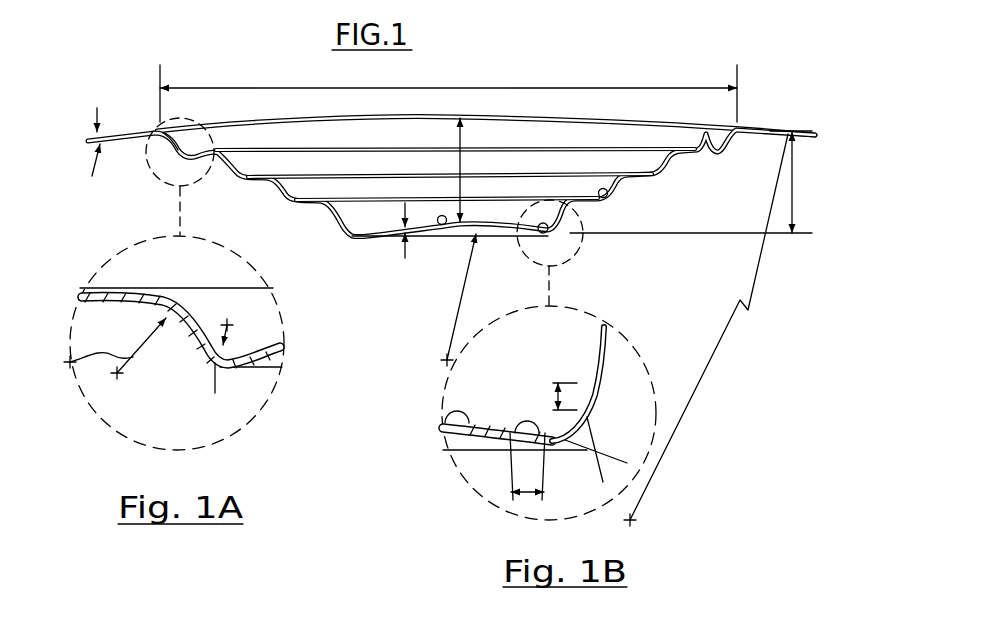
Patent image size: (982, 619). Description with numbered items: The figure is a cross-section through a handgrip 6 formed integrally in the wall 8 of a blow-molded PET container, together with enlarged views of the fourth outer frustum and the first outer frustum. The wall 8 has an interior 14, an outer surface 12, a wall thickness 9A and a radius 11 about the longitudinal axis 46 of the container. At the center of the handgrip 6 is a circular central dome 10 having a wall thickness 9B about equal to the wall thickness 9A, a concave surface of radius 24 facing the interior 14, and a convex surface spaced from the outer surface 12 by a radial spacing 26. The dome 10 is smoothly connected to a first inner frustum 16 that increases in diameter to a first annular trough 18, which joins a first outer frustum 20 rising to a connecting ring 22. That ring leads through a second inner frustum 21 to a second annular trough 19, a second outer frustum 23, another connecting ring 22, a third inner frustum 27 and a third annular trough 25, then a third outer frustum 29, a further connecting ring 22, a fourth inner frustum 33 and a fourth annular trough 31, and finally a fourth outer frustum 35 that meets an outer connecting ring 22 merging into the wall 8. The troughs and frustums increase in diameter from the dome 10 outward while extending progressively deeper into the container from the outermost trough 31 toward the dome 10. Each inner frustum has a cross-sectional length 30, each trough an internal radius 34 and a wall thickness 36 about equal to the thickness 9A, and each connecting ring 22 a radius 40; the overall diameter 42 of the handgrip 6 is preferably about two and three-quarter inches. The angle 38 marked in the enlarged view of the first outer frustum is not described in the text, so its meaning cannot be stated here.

In FIG. 1, the handgrip 6 is at (565, 108).
In FIG. 1, the wall 8 is at (818, 136).
In FIG. 1A, the wall 8 is at (88, 302).
In FIG. 1, the wall thickness 9A is at (73, 151).
In FIG. 1, the wall thickness of central dome 9B is at (398, 248).
In FIG. 1, the circular central dome 10 is at (444, 227).
In FIG. 1B, the circular central dome 10 is at (588, 398).
In FIG. 1, the radius 11 is at (700, 388).
In FIG. 1, the outer surface 12 is at (272, 123).
In FIG. 1, the interior 14 is at (393, 296).
In FIG. 1, the first inner frustum 16 is at (556, 244).
In FIG. 1B, the first inner frustum 16 is at (510, 447).
In FIG. 1, the first annular trough 18 is at (540, 236).
In FIG. 1B, the first annular trough 18 is at (556, 427).
In FIG. 1, the second annular trough 19 is at (620, 194).
In FIG. 1, the first outer frustum 20 is at (563, 222).
In FIG. 1, the second inner frustum 21 is at (587, 204).
In FIG. 1, the connecting ring 22 is at (610, 183).
In FIG. 1A, the connecting ring 22 is at (163, 297).
In FIG. 1B, the connecting ring 22 is at (590, 340).
In FIG. 1, the second outer frustum 23 is at (609, 203).
In FIG. 1, the radius of the concave surface 24 is at (452, 343).
In FIG. 1, the third annular trough 25 is at (685, 173).
In FIG. 1, the radial spacing 26 is at (462, 160).
In FIG. 1, the third inner frustum 27 is at (655, 180).
In FIG. 1, the third outer frustum 29 is at (680, 166).
In FIG. 1B, the length of inner frustum 30 is at (556, 393).
In FIG. 1, the fourth annular trough 31 is at (720, 155).
In FIG. 1A, the fourth annular trough 31 is at (233, 355).
In FIG. 1, the fourth inner frustum 33 is at (698, 148).
In FIG. 1A, the fourth inner frustum 33 is at (273, 348).
In FIG. 1A, the internal radius of trough 34 is at (227, 320).
In FIG. 1, the fourth outer frustum 35 is at (728, 140).
In FIG. 1A, the fourth outer frustum 35 is at (187, 332).
In FIG. 1A, the thickness of trough walls 36 is at (215, 382).
In FIG. 1B, the draft angle 38 is at (603, 480).
In FIG. 1A, the radius of connecting ring 40 is at (75, 366).
In FIG. 1, the diameter of handgrip 42 is at (483, 86).
In FIG. 1, the longitudinal axis 46 is at (631, 521).